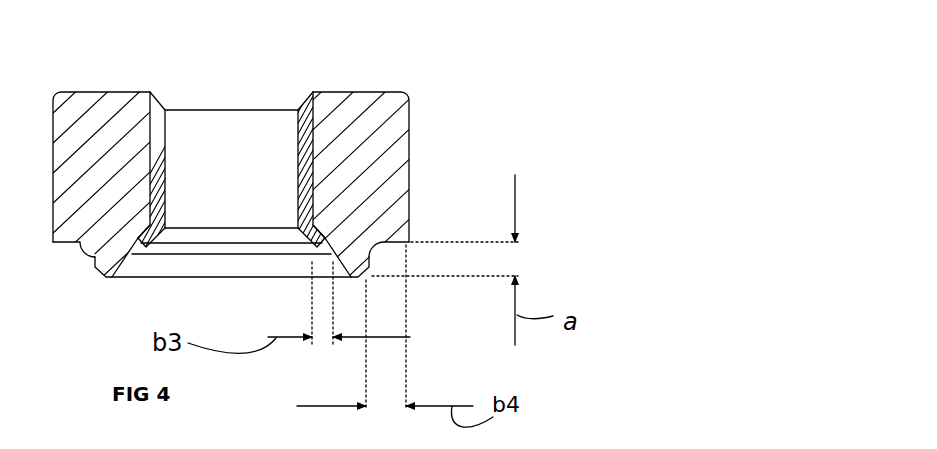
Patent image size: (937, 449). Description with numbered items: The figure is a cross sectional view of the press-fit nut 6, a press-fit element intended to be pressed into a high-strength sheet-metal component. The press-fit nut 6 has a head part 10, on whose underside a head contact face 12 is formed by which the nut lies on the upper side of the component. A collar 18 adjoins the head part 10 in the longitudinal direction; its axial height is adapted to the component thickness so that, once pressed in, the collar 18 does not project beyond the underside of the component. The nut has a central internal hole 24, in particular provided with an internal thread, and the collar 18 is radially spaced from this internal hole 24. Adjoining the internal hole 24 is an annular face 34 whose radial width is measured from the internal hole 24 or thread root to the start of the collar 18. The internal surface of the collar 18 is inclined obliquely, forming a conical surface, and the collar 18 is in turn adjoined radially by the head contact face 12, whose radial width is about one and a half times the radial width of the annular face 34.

The press-fit nut 6 is at (319, 91).
The head part 10 is at (403, 132).
The head contact face 12 is at (83, 245).
The collar 18 is at (100, 279).
The internal hole 24 is at (223, 138).
The annular face 34 is at (323, 250).